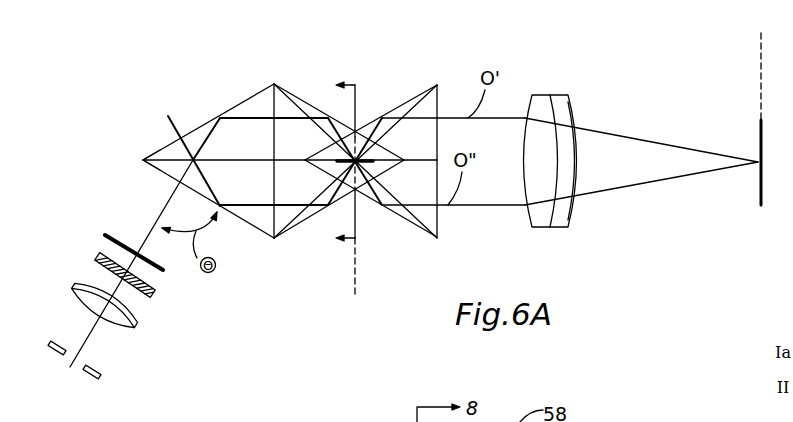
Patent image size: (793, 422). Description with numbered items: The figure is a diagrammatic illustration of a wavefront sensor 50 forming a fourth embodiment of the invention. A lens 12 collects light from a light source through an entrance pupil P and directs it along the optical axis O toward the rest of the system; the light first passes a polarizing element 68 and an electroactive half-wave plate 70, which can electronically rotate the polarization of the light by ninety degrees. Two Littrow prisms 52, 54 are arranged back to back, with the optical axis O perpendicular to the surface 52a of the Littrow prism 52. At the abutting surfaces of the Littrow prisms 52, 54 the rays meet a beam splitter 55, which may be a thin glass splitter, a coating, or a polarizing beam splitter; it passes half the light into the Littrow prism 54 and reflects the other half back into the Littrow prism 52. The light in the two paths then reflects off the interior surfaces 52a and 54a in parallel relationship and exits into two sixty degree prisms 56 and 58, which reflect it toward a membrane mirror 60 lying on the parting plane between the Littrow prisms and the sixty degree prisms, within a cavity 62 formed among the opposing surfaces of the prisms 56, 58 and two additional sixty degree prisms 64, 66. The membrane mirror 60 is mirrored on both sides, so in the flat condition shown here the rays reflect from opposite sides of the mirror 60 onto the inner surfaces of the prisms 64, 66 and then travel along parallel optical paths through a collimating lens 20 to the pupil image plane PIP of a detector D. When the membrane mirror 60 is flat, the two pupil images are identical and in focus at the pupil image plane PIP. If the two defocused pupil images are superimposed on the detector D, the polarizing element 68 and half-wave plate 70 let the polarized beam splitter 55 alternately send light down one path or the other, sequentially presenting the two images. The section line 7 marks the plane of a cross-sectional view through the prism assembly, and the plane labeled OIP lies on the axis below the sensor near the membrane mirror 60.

The lens 12 is at (127, 332).
The collimating lens 20 is at (543, 95).
The wavefront sensor 50 is at (492, 47).
The Littrow prism 52 is at (258, 218).
The surface of Littrow prism 52a is at (162, 173).
The Littrow prism 54 is at (257, 103).
The interior surface of Littrow prism 54a is at (237, 118).
The beam splitter 55 is at (182, 153).
The 60 degree prism 56 is at (295, 218).
The 60 degree prism 58 is at (287, 100).
The membrane mirror 60 is at (370, 166).
The cavity 62 is at (391, 157).
The 60 degree prism 64 is at (428, 230).
The 60 degree prism 66 is at (422, 102).
The polarizing element 68 is at (96, 257).
The electroactive half-wave plate 70 is at (163, 275).
The section line 7- 7 is at (338, 182).
The optical axis O is at (148, 233).
The entrance pupil P is at (75, 373).
The detector D is at (763, 118).
The pupil image plane PIP is at (760, 65).
The object image plane OIP is at (355, 290).